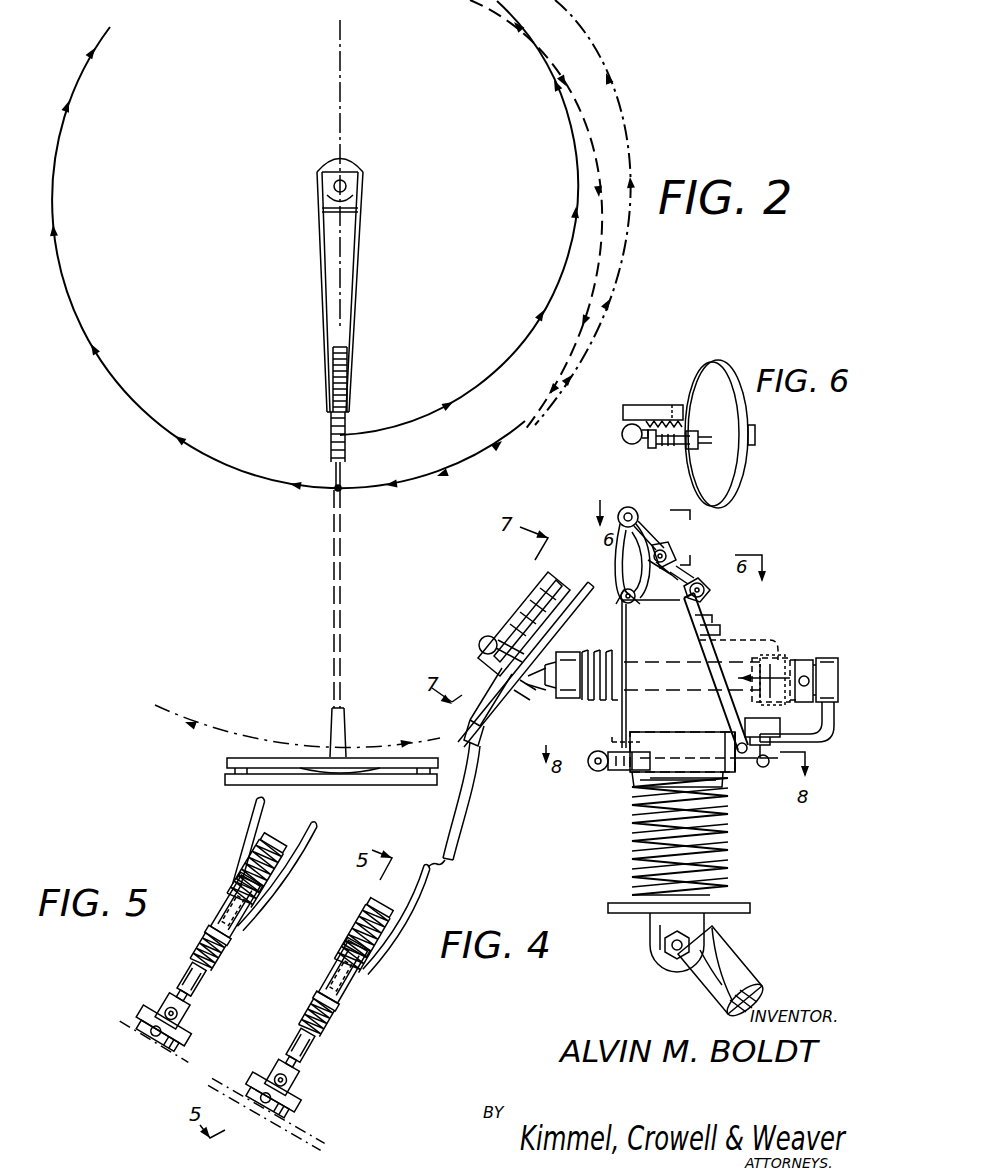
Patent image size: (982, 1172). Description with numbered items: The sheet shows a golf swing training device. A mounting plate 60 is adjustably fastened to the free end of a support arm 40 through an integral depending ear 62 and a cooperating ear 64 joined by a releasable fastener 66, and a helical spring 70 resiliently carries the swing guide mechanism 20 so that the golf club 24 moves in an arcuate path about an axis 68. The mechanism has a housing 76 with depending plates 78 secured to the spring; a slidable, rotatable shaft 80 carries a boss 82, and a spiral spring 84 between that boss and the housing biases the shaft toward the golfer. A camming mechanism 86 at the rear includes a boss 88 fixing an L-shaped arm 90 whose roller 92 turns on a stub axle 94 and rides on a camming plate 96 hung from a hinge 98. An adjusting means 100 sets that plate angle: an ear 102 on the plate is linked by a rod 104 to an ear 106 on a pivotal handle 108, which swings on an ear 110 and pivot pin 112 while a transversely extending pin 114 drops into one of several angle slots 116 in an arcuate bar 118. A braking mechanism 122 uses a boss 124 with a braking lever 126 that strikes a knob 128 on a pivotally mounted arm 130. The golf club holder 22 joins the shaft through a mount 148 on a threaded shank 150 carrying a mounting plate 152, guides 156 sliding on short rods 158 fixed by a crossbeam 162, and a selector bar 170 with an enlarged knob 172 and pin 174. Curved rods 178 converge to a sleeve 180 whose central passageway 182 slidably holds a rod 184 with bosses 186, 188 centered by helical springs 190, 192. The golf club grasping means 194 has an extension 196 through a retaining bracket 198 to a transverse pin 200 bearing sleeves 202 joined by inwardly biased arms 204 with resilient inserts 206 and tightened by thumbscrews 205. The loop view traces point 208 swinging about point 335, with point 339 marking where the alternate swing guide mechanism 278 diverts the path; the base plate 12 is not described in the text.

In FIG. 2, the base plate 12 is at (283, 732).
In FIG. 4, the swing guide mechanism 20 is at (757, 550).
In FIG. 4, the golf club holder 22 is at (474, 822).
In FIG. 2, the golf club 24 is at (330, 560).
In FIG. 4, the golf club 24 is at (334, 1124).
In FIG. 5, the golf club 24 is at (156, 1052).
In FIG. 4, the support arm 40 is at (738, 960).
In FIG. 4, the mounting plate 60 is at (742, 906).
In FIG. 4, the depending ear 62 is at (706, 932).
In FIG. 4, the ear 64 is at (692, 976).
In FIG. 4, the releasable fastener 66 is at (664, 945).
In FIG. 2, the axis 68 is at (333, 186).
In FIG. 4, the helical spring 70 is at (730, 830).
In FIG. 4, the housing 76 is at (622, 712).
In FIG. 4, the depending plates 78 is at (655, 738).
In FIG. 4, the shaft 80 is at (740, 660).
In FIG. 4, the boss 82 is at (568, 652).
In FIG. 4, the spiral spring 84 is at (600, 652).
In FIG. 4, the camming mechanism 86 is at (818, 650).
In FIG. 4, the boss 88 is at (832, 658).
In FIG. 4, the L-shaped arm 90 is at (790, 650).
In FIG. 4, the roller 92 is at (714, 622).
In FIG. 4, the stub axle 94 is at (780, 760).
In FIG. 6, the camming plate 96 is at (724, 376).
In FIG. 4, the camming plate 96 is at (704, 644).
In FIG. 6, the hinge 98 is at (756, 435).
In FIG. 4, the hinge 98 is at (738, 745).
In FIG. 4, the adjusting means 100 is at (696, 558).
In FIG. 6, the ear 102 is at (694, 431).
In FIG. 4, the ear 102 is at (702, 596).
In FIG. 6, the rod 104 is at (672, 448).
In FIG. 4, the rod 104 is at (680, 576).
In FIG. 6, the ear 106 is at (652, 448).
In FIG. 4, the ear 106 is at (660, 564).
In FIG. 6, the pivotal handle 108 is at (634, 444).
In FIG. 4, the pivotal handle 108 is at (622, 566).
In FIG. 4, the ear 110 is at (630, 610).
In FIG. 4, the pivot pin 112 is at (620, 599).
In FIG. 6, the transversely extending pin 114 is at (656, 420).
In FIG. 6, the angle slots 116 is at (678, 420).
In FIG. 6, the arcuate bar 118 is at (630, 405).
In FIG. 4, the arcuate bar 118 is at (628, 507).
In FIG. 4, the braking mechanism 122 is at (590, 774).
In FIG. 4, the boss 124 is at (818, 736).
In FIG. 4, the braking lever 126 is at (804, 658).
In FIG. 4, the knob 128 is at (763, 768).
In FIG. 4, the pivotally mounted arm 130 is at (740, 772).
In FIG. 4, the mount 148 is at (518, 584).
In FIG. 4, the threaded shank 150 is at (546, 692).
In FIG. 4, the mounting plate 152 is at (622, 578).
In FIG. 4, the guides 156 is at (479, 648).
In FIG. 4, the short rods 158 is at (490, 740).
In FIG. 4, the crossbeam 162 is at (468, 718).
In FIG. 4, the selector bar 170 is at (508, 632).
In FIG. 4, the enlarged knob 172 is at (484, 636).
In FIG. 4, the pin 174 is at (526, 704).
In FIG. 4, the curved rods 178 is at (480, 750).
In FIG. 5, the curved rods 178 is at (258, 812).
In FIG. 4, the sleeve 180 is at (376, 968).
In FIG. 5, the sleeve 180 is at (232, 904).
In FIG. 4, the central passageway 182 is at (600, 752).
In FIG. 5, the central passageway 182 is at (243, 880).
In FIG. 4, the rod 184 is at (620, 778).
In FIG. 5, the rod 184 is at (286, 896).
In FIG. 4, the boss 186 is at (390, 922).
In FIG. 5, the boss 186 is at (276, 840).
In FIG. 4, the boss 188 is at (338, 1030).
In FIG. 5, the boss 188 is at (214, 962).
In FIG. 4, the helical spring 190 is at (386, 946).
In FIG. 5, the helical spring 190 is at (250, 848).
In FIG. 4, the helical spring 192 is at (350, 996).
In FIG. 5, the helical spring 192 is at (222, 930).
In FIG. 4, the golf club grasping means 194 is at (293, 1026).
In FIG. 5, the golf club grasping means 194 is at (186, 960).
In FIG. 4, the extension 196 is at (324, 1056).
In FIG. 5, the extension 196 is at (204, 990).
In FIG. 4, the retaining bracket 198 is at (306, 1077).
In FIG. 5, the retaining bracket 198 is at (194, 1012).
In FIG. 4, the transverse pin 200 is at (282, 1066).
In FIG. 5, the transverse pin 200 is at (178, 1040).
In FIG. 4, the sleeves 202 is at (320, 1094).
In FIG. 5, the sleeves 202 is at (170, 996).
In FIG. 4, the inwardly biased arms 204 is at (262, 1104).
In FIG. 5, the inwardly biased arms 204 is at (158, 1022).
In FIG. 4, the adjusting thumbscrews 205 is at (282, 1118).
In FIG. 5, the adjusting thumbscrews 205 is at (188, 1032).
In FIG. 4, the resilient inserts 206 is at (265, 1102).
In FIG. 5, the resilient inserts 206 is at (154, 1034).
In FIG. 2, the point 208 is at (335, 487).
In FIG. 4, the point 208 is at (294, 1056).
In FIG. 2, the swing guide mechanism 278 is at (370, 288).
In FIG. 2, the point 335 is at (338, 228).
In FIG. 2, the point 339 is at (505, 440).